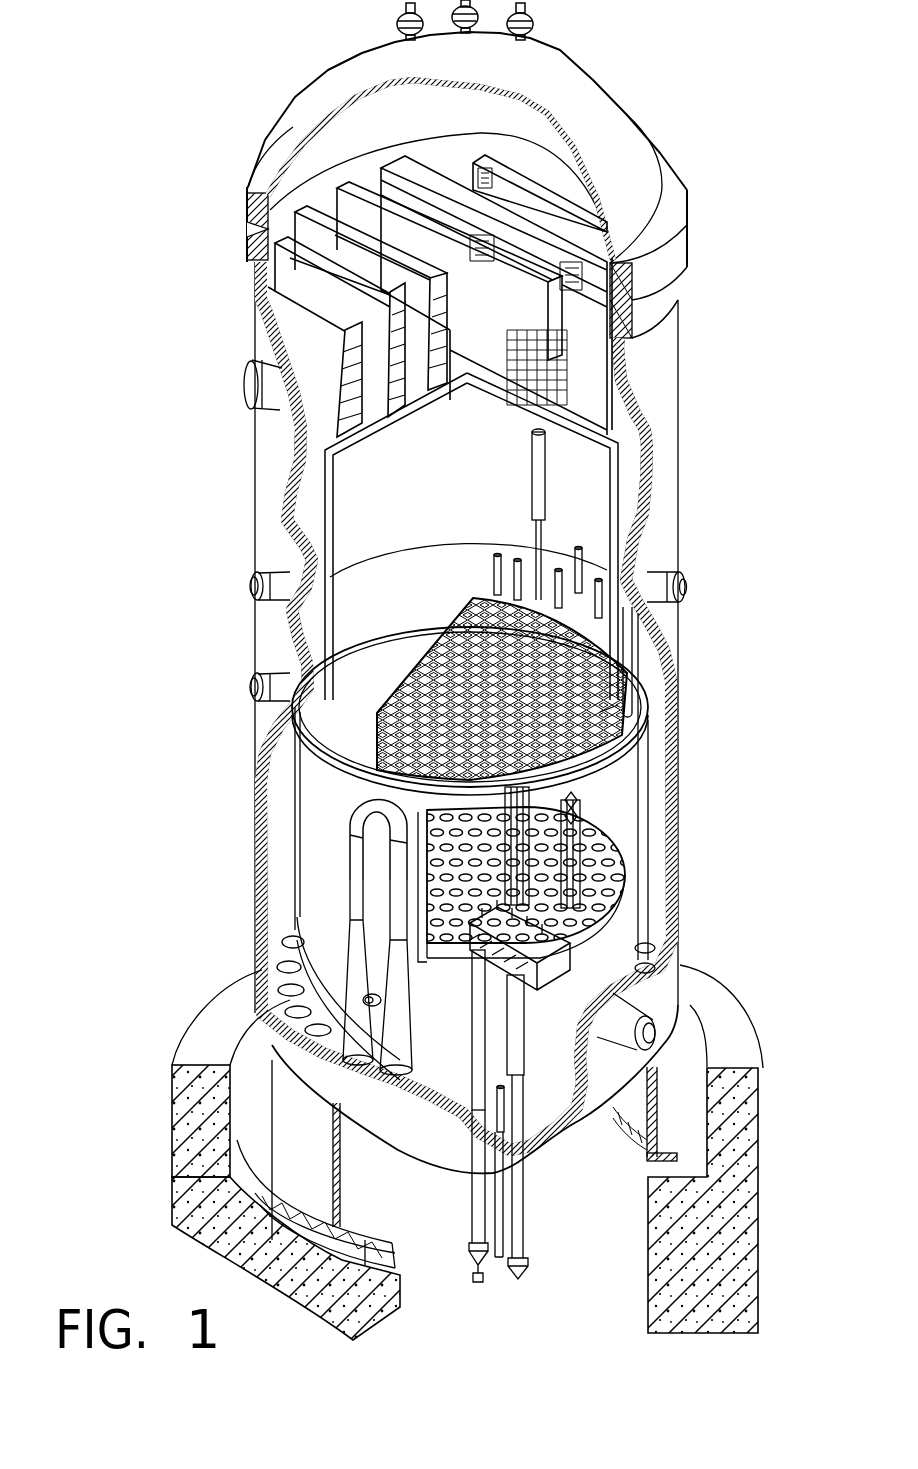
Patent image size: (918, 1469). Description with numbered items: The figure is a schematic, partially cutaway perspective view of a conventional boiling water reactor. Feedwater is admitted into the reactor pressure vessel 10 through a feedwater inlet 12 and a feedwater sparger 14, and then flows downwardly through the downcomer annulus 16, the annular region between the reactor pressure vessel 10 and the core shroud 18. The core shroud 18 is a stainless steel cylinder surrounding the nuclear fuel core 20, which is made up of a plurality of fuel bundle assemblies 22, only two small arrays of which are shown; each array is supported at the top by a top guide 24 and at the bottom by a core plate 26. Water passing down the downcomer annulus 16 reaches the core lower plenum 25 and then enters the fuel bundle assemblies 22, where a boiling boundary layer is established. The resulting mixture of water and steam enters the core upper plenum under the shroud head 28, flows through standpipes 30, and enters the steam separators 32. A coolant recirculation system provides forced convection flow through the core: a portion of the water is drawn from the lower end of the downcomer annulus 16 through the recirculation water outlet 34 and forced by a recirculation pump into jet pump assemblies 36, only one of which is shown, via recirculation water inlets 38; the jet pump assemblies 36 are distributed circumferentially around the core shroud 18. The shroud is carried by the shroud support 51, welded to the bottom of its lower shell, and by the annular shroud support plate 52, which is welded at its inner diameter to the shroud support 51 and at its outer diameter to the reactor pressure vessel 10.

The reactor pressure vessel 10 is at (257, 903).
The feedwater inlet 12 is at (686, 588).
The feedwater sparger 14 is at (640, 590).
The downcomer annulus 16 is at (262, 873).
The core shroud 18 is at (310, 765).
The nuclear fuel core 20 is at (621, 813).
The fuel bundle assemblies 22 is at (548, 800).
The top guide 24 is at (615, 680).
The core lower plenum 25 is at (560, 1082).
The core plate 26 is at (617, 887).
The shroud head 28 is at (385, 568).
The standpipes 30 is at (565, 585).
The steam separators 32 is at (532, 455).
The recirculation water outlet 34 is at (652, 1037).
The jet pump assemblies 36 is at (322, 852).
The recirculation water inlets 38 is at (381, 1002).
The shroud support 51 is at (313, 962).
The annular shroud support plate 52 is at (300, 978).